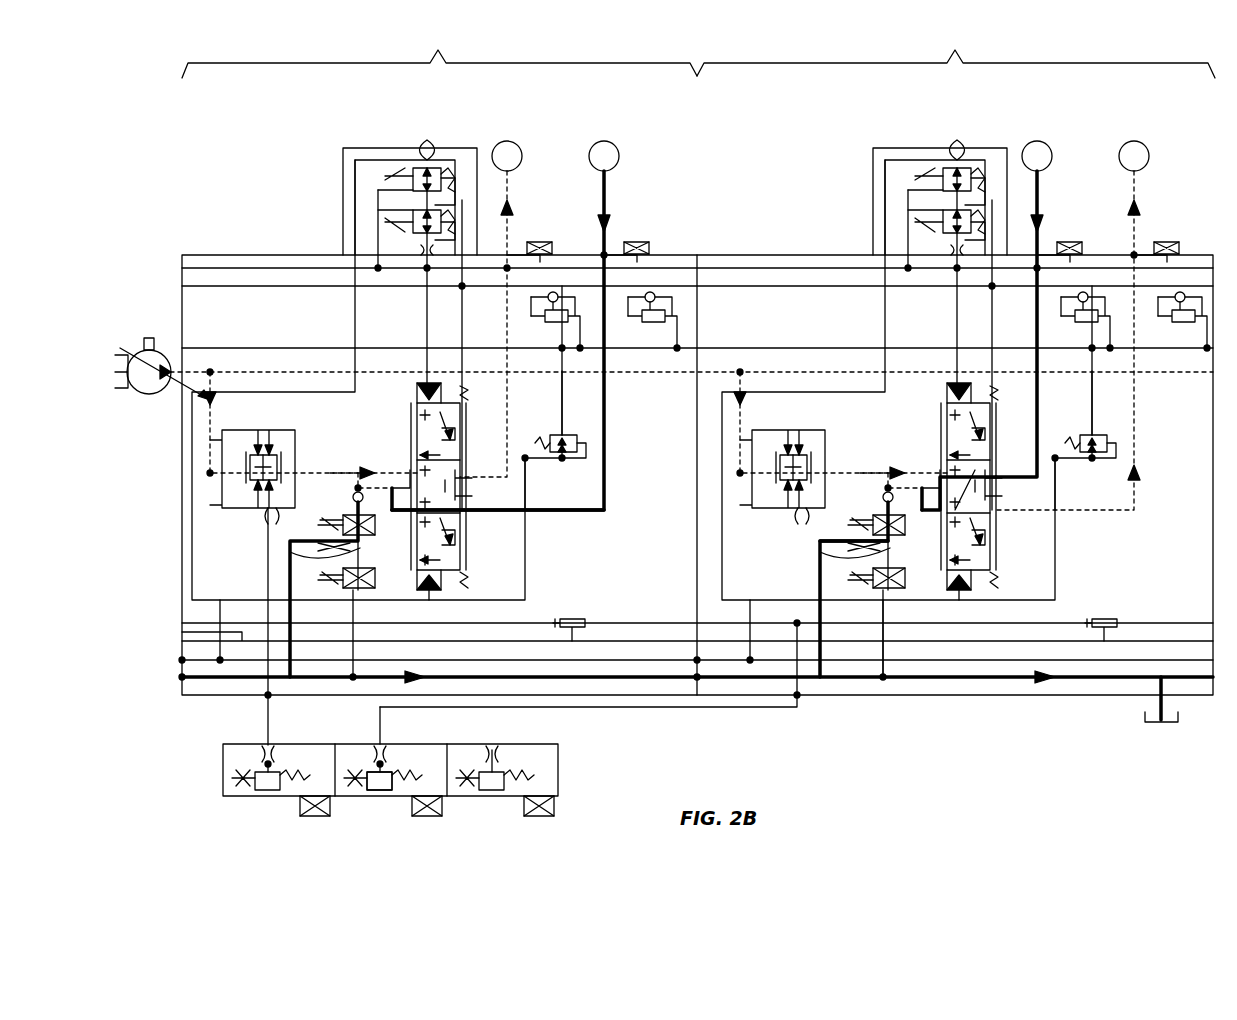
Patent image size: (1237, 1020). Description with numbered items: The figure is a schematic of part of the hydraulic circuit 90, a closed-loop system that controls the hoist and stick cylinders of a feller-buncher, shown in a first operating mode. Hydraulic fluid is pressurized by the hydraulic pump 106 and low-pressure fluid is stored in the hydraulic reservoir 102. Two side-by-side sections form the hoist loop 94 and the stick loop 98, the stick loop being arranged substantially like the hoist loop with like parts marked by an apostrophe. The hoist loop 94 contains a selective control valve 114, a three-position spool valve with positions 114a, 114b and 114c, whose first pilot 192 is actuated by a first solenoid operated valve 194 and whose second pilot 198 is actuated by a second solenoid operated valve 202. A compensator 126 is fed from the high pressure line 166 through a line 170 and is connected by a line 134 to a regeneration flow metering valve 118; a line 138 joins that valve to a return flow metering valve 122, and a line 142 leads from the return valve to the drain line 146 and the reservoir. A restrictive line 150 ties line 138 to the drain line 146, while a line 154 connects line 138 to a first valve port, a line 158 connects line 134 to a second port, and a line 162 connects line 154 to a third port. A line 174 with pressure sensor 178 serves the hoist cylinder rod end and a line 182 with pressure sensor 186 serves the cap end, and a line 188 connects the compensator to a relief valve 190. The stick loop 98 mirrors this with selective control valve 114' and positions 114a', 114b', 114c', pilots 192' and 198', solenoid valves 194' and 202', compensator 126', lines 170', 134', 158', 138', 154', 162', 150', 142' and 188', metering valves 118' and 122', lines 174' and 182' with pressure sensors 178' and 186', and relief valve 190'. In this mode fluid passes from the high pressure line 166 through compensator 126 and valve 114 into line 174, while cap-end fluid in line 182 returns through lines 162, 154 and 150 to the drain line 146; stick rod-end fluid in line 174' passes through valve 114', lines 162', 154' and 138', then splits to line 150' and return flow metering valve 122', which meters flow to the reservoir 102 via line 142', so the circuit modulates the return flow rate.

The hydraulic circuit 90 is at (185, 138).
The hoist loop 94 is at (439, 51).
The stick loop 98 is at (956, 51).
The hydraulic reservoir 102 is at (1158, 722).
The hydraulic pump 106 is at (140, 393).
The selective control valve 114 is at (502, 488).
The first position 114a is at (472, 420).
The second position 114b is at (506, 487).
The third position 114c is at (506, 541).
The regeneration flow metering valve 118 is at (333, 507).
The return flow metering valve 122 is at (298, 578).
The compensator 126 is at (252, 459).
The line 134 is at (332, 441).
The line 138 is at (291, 543).
The line 142 is at (403, 725).
The drain line 146 is at (628, 680).
The line 150 is at (312, 529).
The line 154 is at (350, 548).
The line 158 is at (365, 471).
The line 162 is at (481, 550).
The high pressure line 166 is at (275, 370).
The line 170 is at (269, 424).
The line 174 is at (515, 303).
The pressure sensor 178 is at (550, 230).
The line 182 is at (530, 320).
The pressure sensor 186 is at (647, 230).
The line 188 is at (221, 626).
The relief valve 190 is at (356, 780).
The relief valve 190' is at (362, 809).
The first pilot 192 is at (416, 391).
The first solenoid operated valve 194 is at (392, 184).
The second pilot 198 is at (462, 594).
The second solenoid operated valve 202 is at (441, 240).
The selective control valve 114' is at (1035, 488).
The first position 114a' is at (1004, 420).
The second position 114b' is at (1039, 488).
The third position 114c' is at (1038, 541).
The regeneration flow metering valve 118' is at (863, 507).
The return flow metering valve 122' is at (828, 578).
The compensator 126' is at (782, 459).
The line 134' is at (862, 441).
The line 138' is at (821, 543).
The line 142' is at (920, 676).
The line 150' is at (842, 529).
The line 154' is at (882, 548).
The line 158' is at (895, 471).
The line 162' is at (942, 533).
The line 170' is at (799, 424).
The line 174' is at (1051, 303).
The pressure sensor 178' is at (1083, 230).
The line 182' is at (1100, 320).
The pressure sensor 186' is at (1180, 230).
The line 188' is at (765, 565).
The first pilot 192' is at (944, 391).
The first solenoid operated valve 194' is at (921, 184).
The second pilot 198' is at (995, 594).
The second solenoid operated valve 202' is at (974, 240).